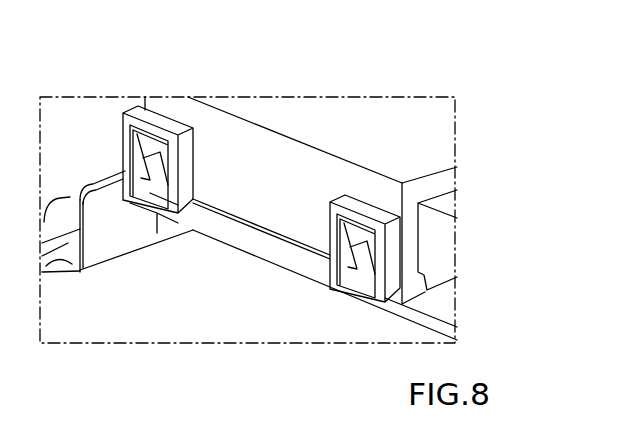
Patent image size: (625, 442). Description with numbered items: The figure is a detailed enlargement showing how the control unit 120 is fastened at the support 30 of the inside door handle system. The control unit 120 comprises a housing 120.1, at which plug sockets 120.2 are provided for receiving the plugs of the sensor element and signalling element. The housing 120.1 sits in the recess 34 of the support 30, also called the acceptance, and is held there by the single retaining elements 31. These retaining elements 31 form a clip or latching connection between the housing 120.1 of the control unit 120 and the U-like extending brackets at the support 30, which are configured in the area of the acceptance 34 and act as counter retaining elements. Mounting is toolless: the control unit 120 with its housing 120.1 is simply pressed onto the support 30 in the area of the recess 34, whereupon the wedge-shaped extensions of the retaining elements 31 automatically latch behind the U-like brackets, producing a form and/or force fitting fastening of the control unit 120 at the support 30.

The control unit 120 is at (296, 209).
The housing 120.1 is at (316, 213).
The plug sockets 120.2 is at (435, 248).
The support 30 is at (95, 240).
The retaining elements 31 is at (317, 215).
The recess 34 is at (297, 262).